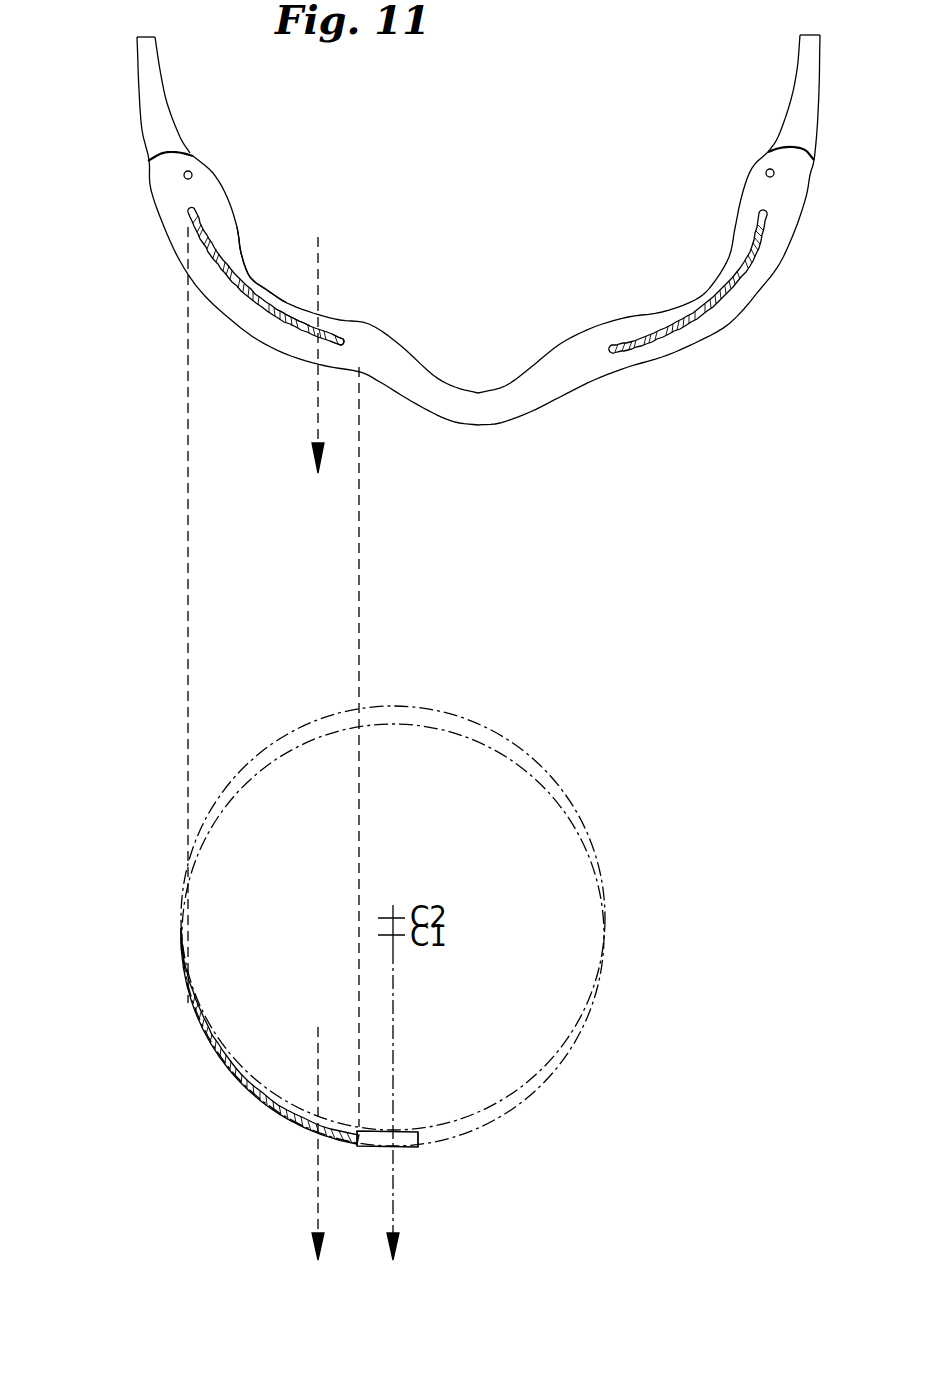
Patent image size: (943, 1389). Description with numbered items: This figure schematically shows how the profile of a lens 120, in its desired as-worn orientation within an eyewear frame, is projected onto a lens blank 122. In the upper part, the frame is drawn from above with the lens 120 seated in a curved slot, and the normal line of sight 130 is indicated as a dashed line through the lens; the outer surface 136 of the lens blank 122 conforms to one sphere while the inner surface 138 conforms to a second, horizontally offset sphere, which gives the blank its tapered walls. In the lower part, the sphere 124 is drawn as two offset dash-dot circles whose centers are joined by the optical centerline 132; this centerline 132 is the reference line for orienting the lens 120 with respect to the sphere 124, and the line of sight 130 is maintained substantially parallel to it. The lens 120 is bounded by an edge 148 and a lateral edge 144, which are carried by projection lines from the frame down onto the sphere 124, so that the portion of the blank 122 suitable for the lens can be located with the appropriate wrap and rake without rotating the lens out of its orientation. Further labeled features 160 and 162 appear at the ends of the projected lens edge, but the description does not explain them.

The lens 120 is at (232, 306).
The lens blank 122 is at (407, 1132).
The sphere 124 is at (563, 1045).
The normal line of sight 130 is at (317, 260).
The optical centerline 132 is at (393, 1203).
The outer surface 136 is at (298, 340).
The inner surface 138 is at (265, 290).
The lateral edge 144 is at (190, 212).
The edge 148 is at (377, 338).
The lens outer end 160 is at (418, 1142).
The lens upper end 162 is at (181, 930).